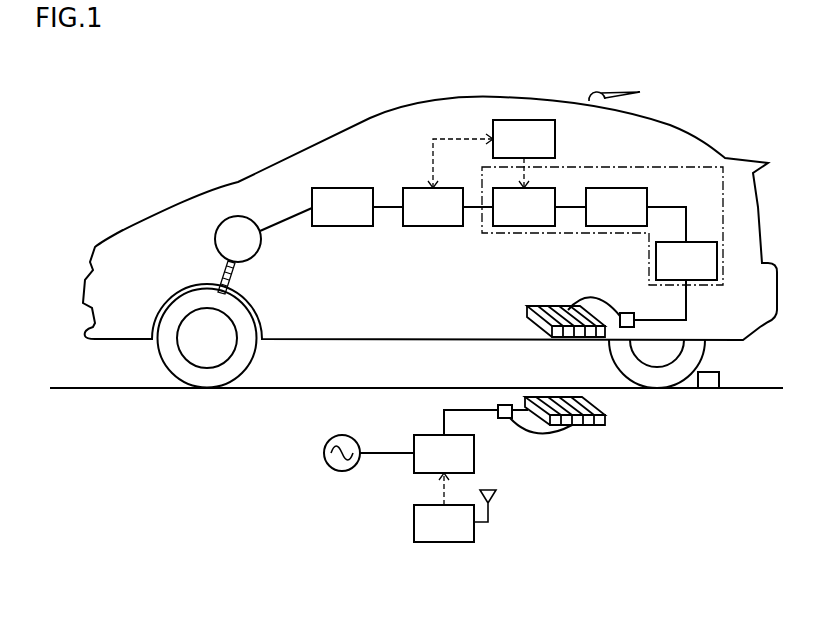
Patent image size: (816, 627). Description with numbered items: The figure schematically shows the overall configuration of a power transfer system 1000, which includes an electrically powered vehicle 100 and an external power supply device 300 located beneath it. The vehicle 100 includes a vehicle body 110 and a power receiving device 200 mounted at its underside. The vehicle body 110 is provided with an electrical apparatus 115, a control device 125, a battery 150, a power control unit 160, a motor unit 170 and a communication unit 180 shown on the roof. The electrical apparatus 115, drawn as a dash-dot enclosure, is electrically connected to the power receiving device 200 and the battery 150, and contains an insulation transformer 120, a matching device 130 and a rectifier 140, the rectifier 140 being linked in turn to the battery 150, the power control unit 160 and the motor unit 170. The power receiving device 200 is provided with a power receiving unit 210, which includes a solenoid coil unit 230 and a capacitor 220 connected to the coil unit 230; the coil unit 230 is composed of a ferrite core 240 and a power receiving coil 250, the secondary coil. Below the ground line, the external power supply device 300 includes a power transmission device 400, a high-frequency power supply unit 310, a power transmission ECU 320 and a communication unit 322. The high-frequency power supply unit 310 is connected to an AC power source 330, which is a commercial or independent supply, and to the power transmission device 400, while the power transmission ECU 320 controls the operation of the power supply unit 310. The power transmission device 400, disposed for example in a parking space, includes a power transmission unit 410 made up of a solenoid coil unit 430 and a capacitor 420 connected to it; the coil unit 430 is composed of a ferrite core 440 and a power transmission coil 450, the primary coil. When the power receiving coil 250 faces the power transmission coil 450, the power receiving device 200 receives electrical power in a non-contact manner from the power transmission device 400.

The power transfer system 1000 is at (157, 73).
The electrically powered vehicle 100 is at (273, 155).
The vehicle body 110 is at (467, 95).
The electrical apparatus 115 is at (619, 232).
The insulation transformer 120 is at (707, 280).
The control device 125 is at (555, 140).
The matching device 130 is at (625, 188).
The rectifier 140 is at (527, 188).
The battery 150 is at (405, 187).
The power control unit 160 is at (342, 187).
The motor unit 170 is at (250, 217).
The communication unit 180 is at (620, 92).
The power receiving device 200 is at (552, 286).
The power receiving unit 210 is at (556, 286).
The capacitor 220 is at (627, 313).
The solenoid coil unit 230 is at (557, 302).
The ferrite core 240 is at (527, 308).
The power receiving coil 250 is at (547, 320).
The external power supply device 300 is at (478, 494).
The high-frequency power supply unit 310 is at (430, 434).
The power transmission ECU 320 is at (430, 504).
The communication unit 322 is at (503, 516).
The AC power source 330 is at (330, 440).
The power transmission device 400 is at (583, 447).
The power transmission unit 410 is at (577, 447).
The capacitor 420 is at (503, 418).
The solenoid coil unit 430 is at (577, 428).
The ferrite core 440 is at (593, 417).
The power transmission coil 450 is at (593, 399).